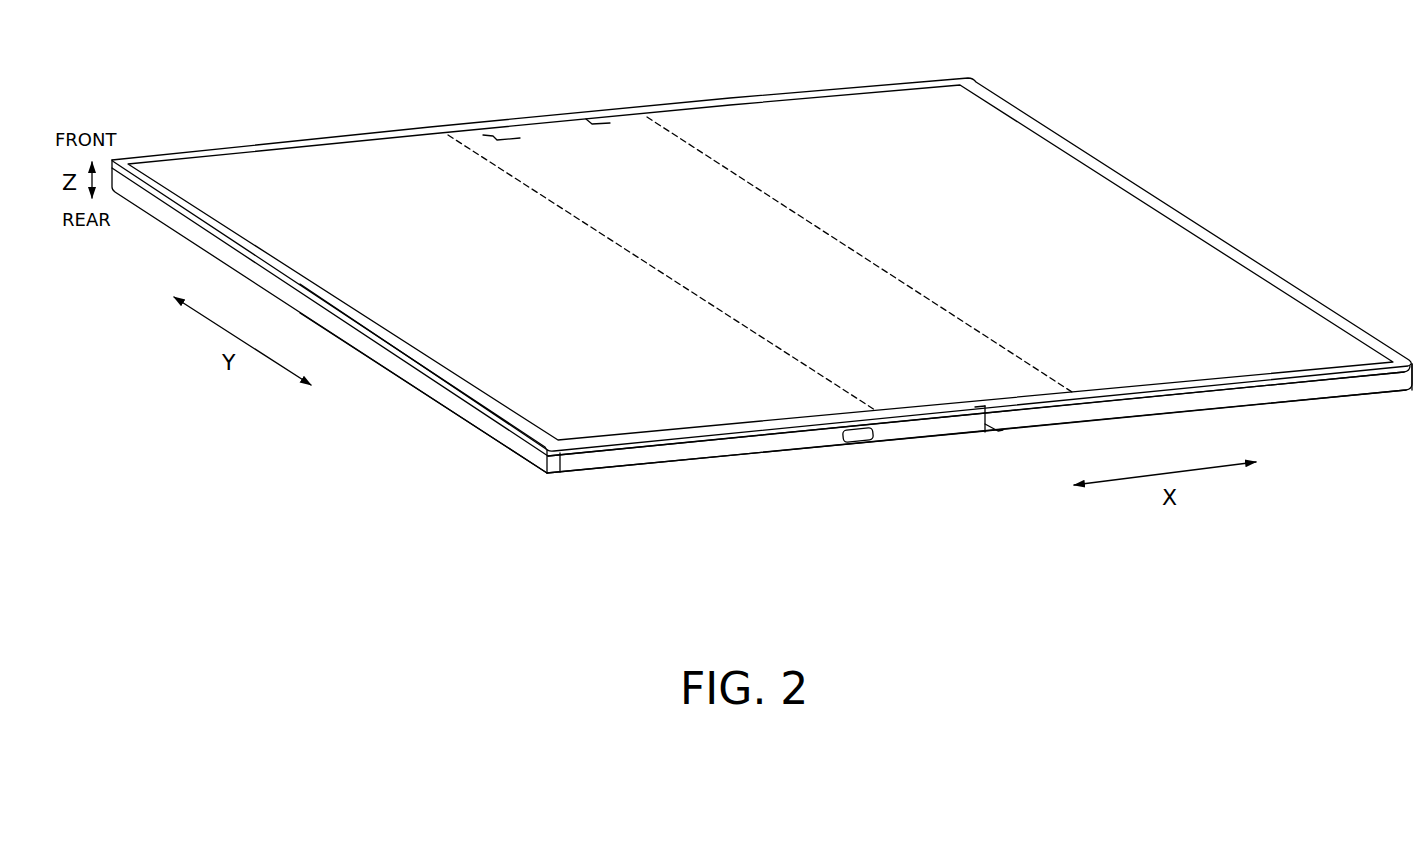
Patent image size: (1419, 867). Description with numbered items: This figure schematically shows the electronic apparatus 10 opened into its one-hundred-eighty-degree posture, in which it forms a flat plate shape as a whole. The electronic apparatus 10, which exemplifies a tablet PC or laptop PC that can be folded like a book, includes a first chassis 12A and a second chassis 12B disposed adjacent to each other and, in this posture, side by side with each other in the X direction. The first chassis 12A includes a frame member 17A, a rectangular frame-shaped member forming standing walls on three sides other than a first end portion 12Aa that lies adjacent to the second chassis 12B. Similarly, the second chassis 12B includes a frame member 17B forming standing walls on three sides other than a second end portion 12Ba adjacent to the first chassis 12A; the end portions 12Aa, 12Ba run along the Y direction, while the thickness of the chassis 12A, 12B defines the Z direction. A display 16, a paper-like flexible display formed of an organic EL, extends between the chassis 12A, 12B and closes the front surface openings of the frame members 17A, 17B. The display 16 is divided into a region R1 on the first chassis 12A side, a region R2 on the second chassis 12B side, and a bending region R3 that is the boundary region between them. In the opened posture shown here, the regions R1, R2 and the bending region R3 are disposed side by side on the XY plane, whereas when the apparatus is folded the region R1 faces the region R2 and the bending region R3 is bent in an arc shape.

The electronic apparatus 10 is at (159, 65).
The display 16 is at (994, 147).
The first chassis 12A is at (692, 471).
The second chassis 12B is at (1303, 416).
The first end portion 12Aa is at (999, 433).
The second end portion 12Ba is at (984, 418).
The frame member 17A is at (592, 471).
The frame member 17B is at (1368, 389).
The region R1 is at (800, 363).
The region R2 is at (1313, 313).
The bending region R3 is at (997, 344).